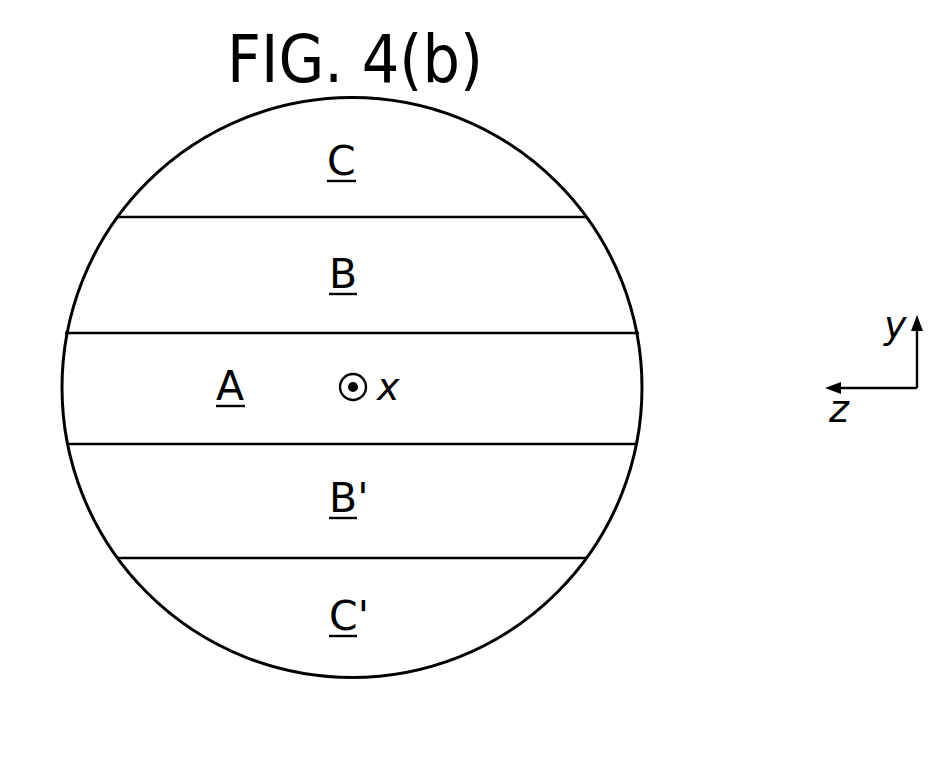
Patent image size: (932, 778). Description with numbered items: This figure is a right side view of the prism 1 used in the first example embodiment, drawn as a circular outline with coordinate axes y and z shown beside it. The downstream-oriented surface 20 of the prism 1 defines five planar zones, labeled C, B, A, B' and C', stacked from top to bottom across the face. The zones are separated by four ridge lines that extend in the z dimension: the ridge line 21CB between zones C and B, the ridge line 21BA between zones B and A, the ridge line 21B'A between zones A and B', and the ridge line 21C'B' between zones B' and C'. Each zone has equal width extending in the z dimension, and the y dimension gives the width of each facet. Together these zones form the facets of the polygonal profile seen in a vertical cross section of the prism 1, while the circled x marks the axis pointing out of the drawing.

The prism 1 is at (533, 145).
The surface 20 is at (410, 388).
The ridge line 21CB is at (533, 217).
The ridge line 21BA is at (598, 333).
The ridge line 21B'A is at (411, 480).
The ridge line 21C'B' is at (414, 594).